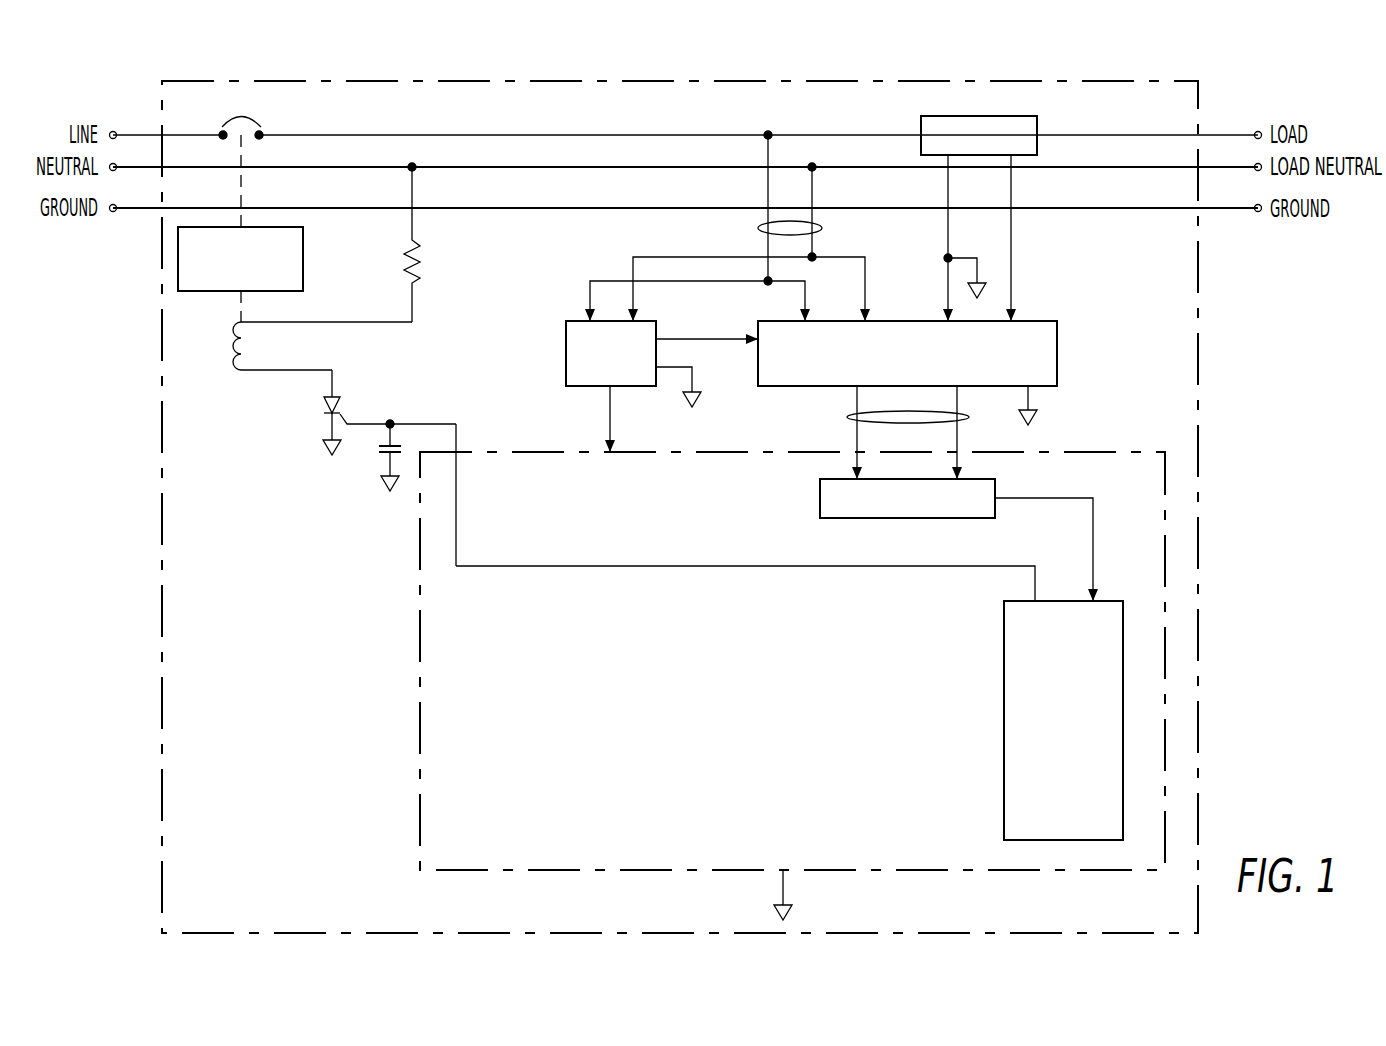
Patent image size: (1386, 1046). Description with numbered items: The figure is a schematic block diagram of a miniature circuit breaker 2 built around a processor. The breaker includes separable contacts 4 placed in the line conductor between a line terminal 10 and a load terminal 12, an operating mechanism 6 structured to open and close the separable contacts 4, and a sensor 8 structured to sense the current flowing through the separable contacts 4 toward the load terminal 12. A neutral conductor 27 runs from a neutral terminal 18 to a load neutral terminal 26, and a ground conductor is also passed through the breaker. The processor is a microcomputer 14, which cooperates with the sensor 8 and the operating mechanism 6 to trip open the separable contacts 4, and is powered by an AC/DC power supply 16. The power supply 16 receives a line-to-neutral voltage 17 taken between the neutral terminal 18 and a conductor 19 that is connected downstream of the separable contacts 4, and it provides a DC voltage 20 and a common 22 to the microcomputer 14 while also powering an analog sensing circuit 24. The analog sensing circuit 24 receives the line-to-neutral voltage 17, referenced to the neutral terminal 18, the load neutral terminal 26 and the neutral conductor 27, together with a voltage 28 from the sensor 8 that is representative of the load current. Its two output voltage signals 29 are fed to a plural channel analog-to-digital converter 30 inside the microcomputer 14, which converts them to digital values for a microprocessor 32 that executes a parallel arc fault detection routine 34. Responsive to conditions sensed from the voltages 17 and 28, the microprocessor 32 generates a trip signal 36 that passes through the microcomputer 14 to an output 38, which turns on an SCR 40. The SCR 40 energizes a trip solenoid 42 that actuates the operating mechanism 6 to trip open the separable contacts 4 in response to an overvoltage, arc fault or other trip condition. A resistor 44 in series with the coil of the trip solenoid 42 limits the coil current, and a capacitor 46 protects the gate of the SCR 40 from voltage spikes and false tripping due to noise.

The miniature circuit breaker 2 is at (162, 660).
The separable contacts 4 is at (277, 123).
The operating mechanism 6 is at (304, 256).
The sensor 8 is at (936, 116).
The line terminal 10 is at (115, 132).
The load terminal 12 is at (1256, 131).
The microcomputer 14 is at (420, 745).
The power supply 16 is at (566, 352).
The line-to-neutral voltage 17 is at (759, 228).
The neutral terminal 18 is at (114, 171).
The conductor 19 is at (767, 132).
The DC voltage 20 is at (610, 417).
The common 22 is at (961, 257).
The analog sensing circuit 24 is at (1058, 356).
The load neutral terminal 26 is at (1255, 170).
The neutral conductor 27 is at (483, 170).
The voltage representative of load current 28 is at (1012, 251).
The output voltage signals 29 is at (847, 417).
The analog-to-digital converter 30 is at (996, 486).
The microprocessor 32 is at (1004, 748).
The parallel arc fault detection routine 34 is at (1107, 618).
The trip signal 36 is at (540, 566).
The output 38 is at (458, 448).
The SCR 40 is at (340, 397).
The trip solenoid 42 is at (230, 366).
The resistor 44 is at (421, 264).
The capacitor 46 is at (380, 467).